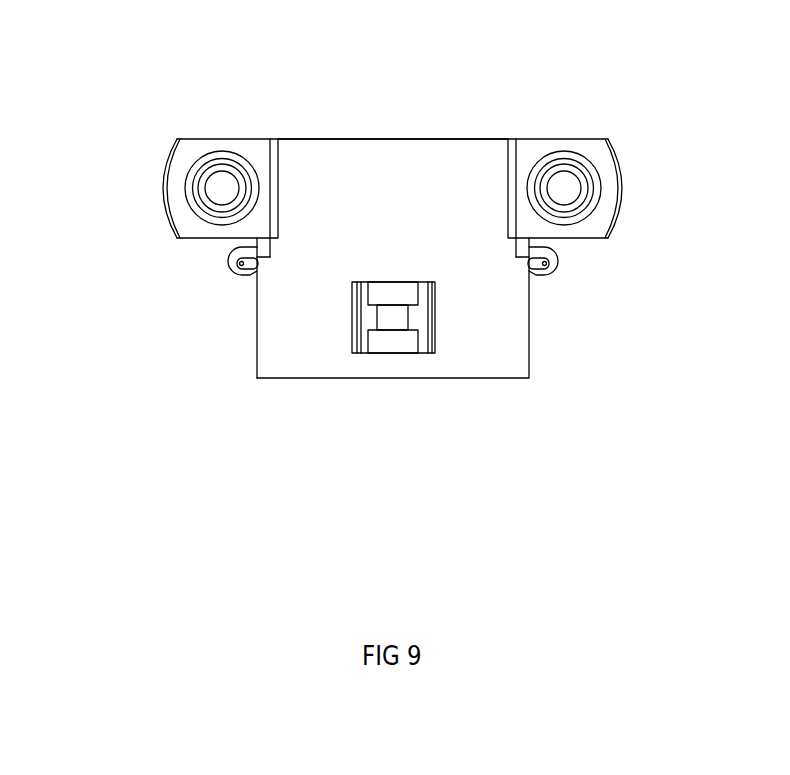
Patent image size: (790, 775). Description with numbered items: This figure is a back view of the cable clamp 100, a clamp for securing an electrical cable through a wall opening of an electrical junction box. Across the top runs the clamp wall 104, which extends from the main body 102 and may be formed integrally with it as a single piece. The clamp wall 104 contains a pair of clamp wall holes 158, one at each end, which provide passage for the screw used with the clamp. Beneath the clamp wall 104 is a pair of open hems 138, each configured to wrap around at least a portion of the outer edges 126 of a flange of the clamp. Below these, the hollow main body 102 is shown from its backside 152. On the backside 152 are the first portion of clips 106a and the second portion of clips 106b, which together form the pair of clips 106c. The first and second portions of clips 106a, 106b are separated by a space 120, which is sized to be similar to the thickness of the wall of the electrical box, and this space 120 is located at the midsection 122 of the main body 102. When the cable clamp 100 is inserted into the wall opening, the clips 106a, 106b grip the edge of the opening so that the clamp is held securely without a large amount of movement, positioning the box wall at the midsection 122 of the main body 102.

The cable clamp 100 is at (152, 124).
The main body 102 is at (288, 368).
The clamp wall 104 is at (395, 172).
The first portion of clips 106a is at (388, 293).
The second portion of clips 106b is at (392, 342).
The pair of clips 106c is at (349, 283).
The space 120 is at (392, 318).
The midsection 122 is at (257, 312).
The outer edges 126 is at (237, 267).
The open hems 138 is at (233, 258).
The backside 152 is at (390, 255).
The clamp wall holes 158 is at (222, 188).